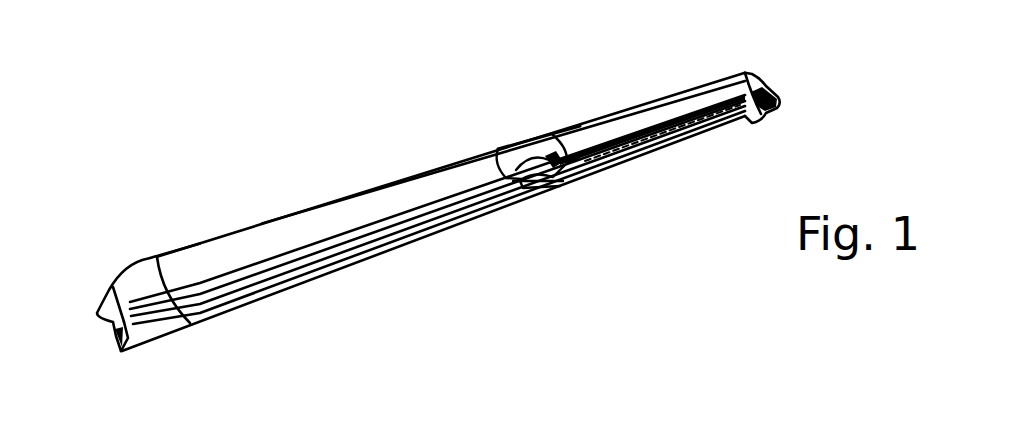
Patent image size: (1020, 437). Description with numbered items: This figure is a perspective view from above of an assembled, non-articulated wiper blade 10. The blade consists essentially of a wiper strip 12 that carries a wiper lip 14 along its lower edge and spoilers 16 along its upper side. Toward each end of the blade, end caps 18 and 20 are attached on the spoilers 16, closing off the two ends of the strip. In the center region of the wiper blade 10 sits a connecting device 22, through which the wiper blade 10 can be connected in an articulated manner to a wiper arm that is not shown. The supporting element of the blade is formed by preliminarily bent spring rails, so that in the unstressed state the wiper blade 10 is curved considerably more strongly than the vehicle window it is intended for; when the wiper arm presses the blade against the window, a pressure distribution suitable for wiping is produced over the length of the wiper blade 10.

The wiper blade 10 is at (265, 205).
The wiper strip 12 is at (433, 250).
The wiper lip 14 is at (205, 316).
The spoilers 16 is at (368, 208).
The end cap 18 is at (137, 283).
The end cap 20 is at (762, 83).
The connecting device 22 is at (528, 125).